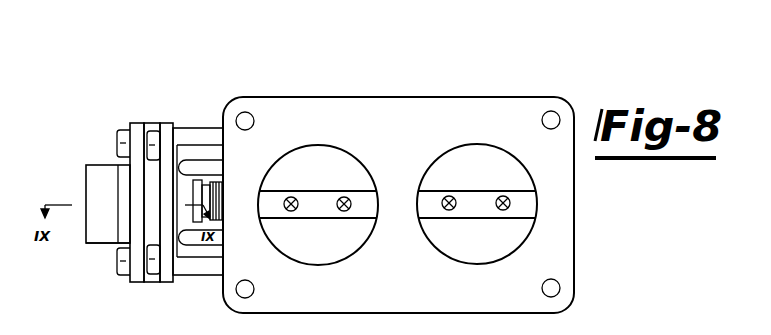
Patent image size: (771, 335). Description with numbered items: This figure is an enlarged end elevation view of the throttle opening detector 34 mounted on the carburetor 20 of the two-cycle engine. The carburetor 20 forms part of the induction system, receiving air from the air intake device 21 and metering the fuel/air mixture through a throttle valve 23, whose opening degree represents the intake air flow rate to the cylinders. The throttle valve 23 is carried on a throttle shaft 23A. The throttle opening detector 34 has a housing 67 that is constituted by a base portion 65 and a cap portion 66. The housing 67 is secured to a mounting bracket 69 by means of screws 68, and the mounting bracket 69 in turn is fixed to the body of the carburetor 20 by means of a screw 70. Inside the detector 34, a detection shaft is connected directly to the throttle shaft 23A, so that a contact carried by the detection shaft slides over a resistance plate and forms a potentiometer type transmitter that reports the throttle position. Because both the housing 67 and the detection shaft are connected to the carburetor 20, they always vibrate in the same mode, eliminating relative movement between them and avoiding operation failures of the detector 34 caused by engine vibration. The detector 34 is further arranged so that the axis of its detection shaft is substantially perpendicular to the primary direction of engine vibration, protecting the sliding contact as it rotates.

The carburetor 20 is at (473, 97).
The air intake device 21 is at (426, 314).
The throttle valve 23 is at (496, 157).
The throttle shaft 23A is at (525, 202).
The throttle opening detector 34 is at (103, 244).
The base portion 65 is at (137, 133).
The cap portion 66 is at (102, 177).
The housing 67 is at (105, 160).
The screws 68 is at (118, 130).
The mounting bracket 69 is at (173, 130).
The screw 70 is at (154, 130).